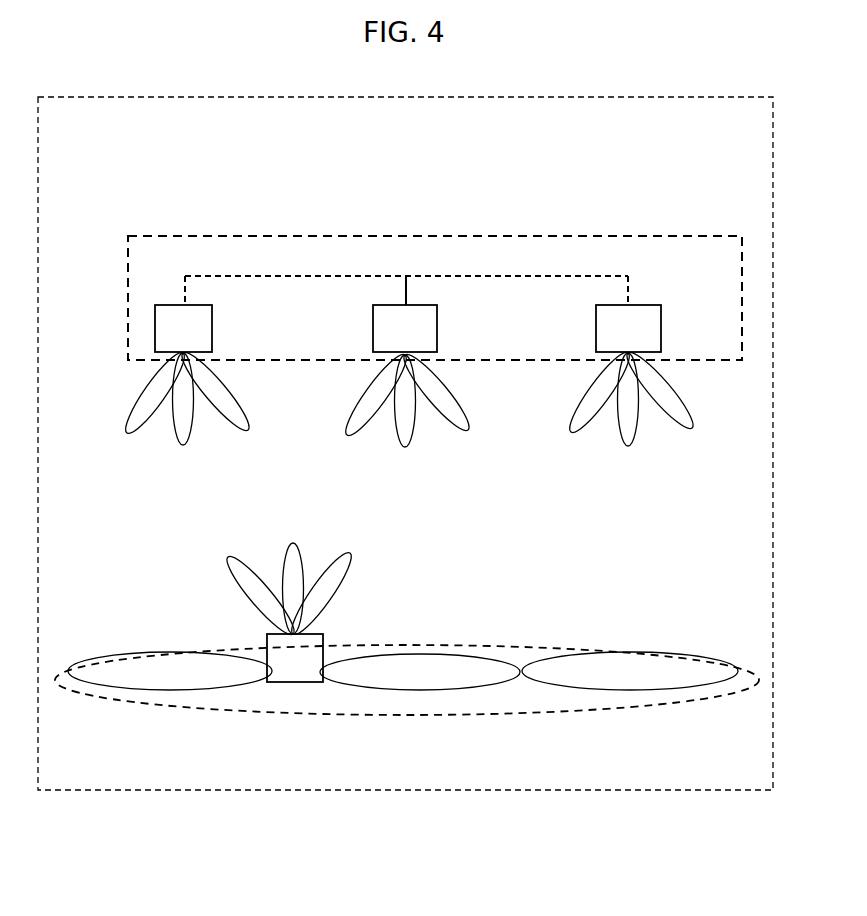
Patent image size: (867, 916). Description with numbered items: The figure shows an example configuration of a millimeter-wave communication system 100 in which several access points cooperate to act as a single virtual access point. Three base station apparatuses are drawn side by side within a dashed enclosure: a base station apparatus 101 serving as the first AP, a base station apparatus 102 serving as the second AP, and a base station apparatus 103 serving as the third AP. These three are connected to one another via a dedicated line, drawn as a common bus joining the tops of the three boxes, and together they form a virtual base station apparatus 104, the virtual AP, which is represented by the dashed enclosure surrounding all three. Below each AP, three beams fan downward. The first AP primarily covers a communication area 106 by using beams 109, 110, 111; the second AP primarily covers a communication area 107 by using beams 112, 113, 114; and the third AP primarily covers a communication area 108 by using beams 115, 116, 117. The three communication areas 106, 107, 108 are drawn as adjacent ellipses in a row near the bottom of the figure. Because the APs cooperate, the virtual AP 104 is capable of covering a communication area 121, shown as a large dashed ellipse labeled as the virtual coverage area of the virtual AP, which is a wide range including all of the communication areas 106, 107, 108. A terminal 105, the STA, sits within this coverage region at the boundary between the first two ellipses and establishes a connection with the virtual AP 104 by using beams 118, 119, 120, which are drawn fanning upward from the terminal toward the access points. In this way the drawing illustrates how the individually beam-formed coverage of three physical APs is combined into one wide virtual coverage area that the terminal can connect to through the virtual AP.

The millimeter-wave communication system 100 is at (163, 138).
The base station apparatus 101 is at (179, 304).
The base station apparatus 102 is at (422, 318).
The base station apparatus 103 is at (644, 317).
The virtual base station apparatus 104 is at (435, 275).
The terminal 105 is at (315, 643).
The communication area 106 is at (170, 648).
The communication area 107 is at (420, 641).
The communication area 108 is at (630, 649).
The beam 109 is at (146, 393).
The beam 110 is at (198, 418).
The beam 111 is at (238, 391).
The beam 112 is at (368, 395).
The beam 113 is at (419, 418).
The beam 114 is at (462, 392).
The beam 115 is at (590, 392).
The beam 116 is at (642, 417).
The beam 117 is at (684, 390).
The beam 118 is at (252, 581).
The beam 119 is at (308, 577).
The beam 120 is at (332, 577).
The communication area 121 is at (407, 706).